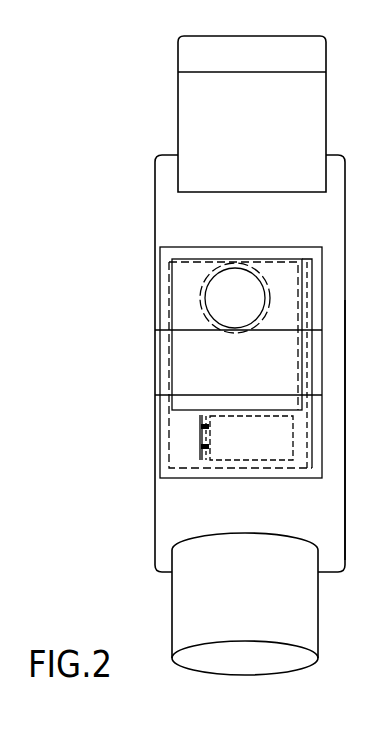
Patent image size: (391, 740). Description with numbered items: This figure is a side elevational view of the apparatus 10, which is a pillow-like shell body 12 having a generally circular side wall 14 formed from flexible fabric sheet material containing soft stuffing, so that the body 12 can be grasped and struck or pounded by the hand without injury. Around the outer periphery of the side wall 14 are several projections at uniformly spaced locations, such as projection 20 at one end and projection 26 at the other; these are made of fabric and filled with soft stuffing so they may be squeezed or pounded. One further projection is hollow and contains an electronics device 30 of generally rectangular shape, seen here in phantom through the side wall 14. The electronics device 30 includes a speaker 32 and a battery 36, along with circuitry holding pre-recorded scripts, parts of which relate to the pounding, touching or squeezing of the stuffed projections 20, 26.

The apparatus 10 is at (138, 407).
The shell-like body 12 is at (155, 498).
The side wall 14 is at (328, 505).
The projection 20 is at (178, 122).
The projection 26 is at (172, 622).
The electronics device 30 is at (287, 317).
The speaker 32 is at (225, 288).
The battery 36 is at (310, 450).